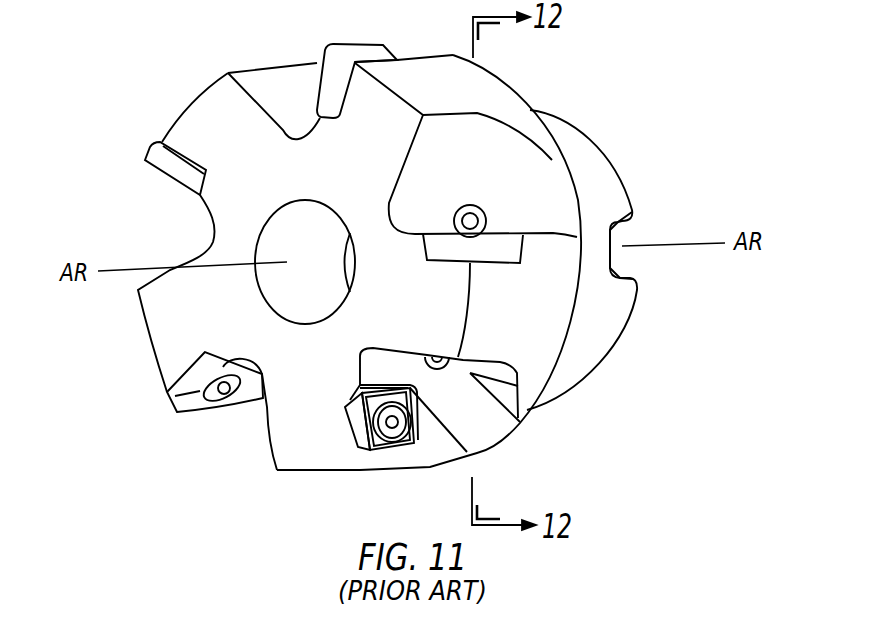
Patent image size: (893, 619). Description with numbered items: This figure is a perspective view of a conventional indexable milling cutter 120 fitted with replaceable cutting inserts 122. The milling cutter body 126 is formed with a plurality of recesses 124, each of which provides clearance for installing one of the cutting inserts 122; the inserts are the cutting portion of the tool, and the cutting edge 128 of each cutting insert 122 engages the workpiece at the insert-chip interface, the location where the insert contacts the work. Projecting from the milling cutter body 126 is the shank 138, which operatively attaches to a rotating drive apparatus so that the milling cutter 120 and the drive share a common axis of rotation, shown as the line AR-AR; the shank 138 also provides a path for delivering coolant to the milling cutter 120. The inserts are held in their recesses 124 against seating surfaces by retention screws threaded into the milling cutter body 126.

The milling cutter 120 is at (171, 75).
The cutting insert 122 is at (175, 408).
The recess 124 is at (211, 218).
The milling cutter body 126 is at (206, 327).
The cutting edge 128 is at (428, 462).
The shank 138 is at (610, 205).